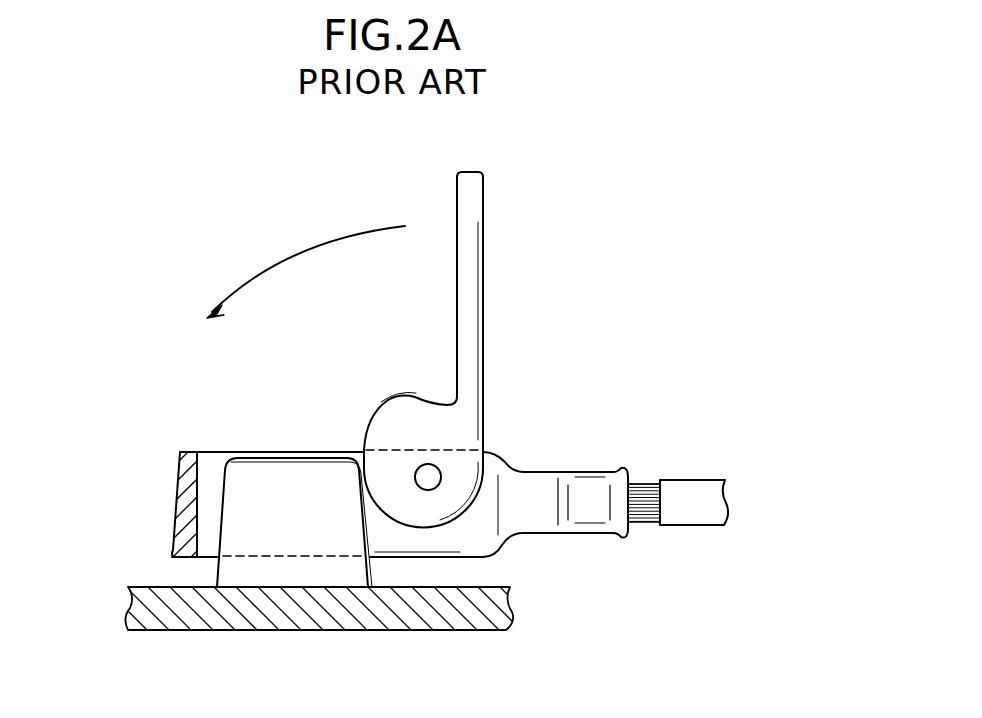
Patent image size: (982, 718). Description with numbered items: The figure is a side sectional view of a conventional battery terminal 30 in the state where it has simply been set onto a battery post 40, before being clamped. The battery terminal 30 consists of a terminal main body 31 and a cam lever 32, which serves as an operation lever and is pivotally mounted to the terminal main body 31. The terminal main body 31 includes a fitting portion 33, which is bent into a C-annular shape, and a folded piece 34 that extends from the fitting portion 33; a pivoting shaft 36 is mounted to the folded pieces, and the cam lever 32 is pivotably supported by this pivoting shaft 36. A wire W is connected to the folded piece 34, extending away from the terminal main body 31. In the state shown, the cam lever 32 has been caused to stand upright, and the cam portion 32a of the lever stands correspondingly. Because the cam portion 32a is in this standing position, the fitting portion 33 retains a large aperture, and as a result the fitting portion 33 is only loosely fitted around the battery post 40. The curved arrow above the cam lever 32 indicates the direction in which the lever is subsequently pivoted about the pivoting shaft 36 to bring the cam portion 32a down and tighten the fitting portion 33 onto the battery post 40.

The battery terminal 30 is at (525, 388).
The terminal main body 31 is at (188, 417).
The cam lever 32 is at (473, 203).
The cam portion 32a is at (398, 395).
The fitting portion 33 is at (177, 492).
The folded piece 34 is at (553, 477).
The pivoting shaft 36 is at (415, 472).
The battery post 40 is at (258, 462).
The wire W is at (697, 487).